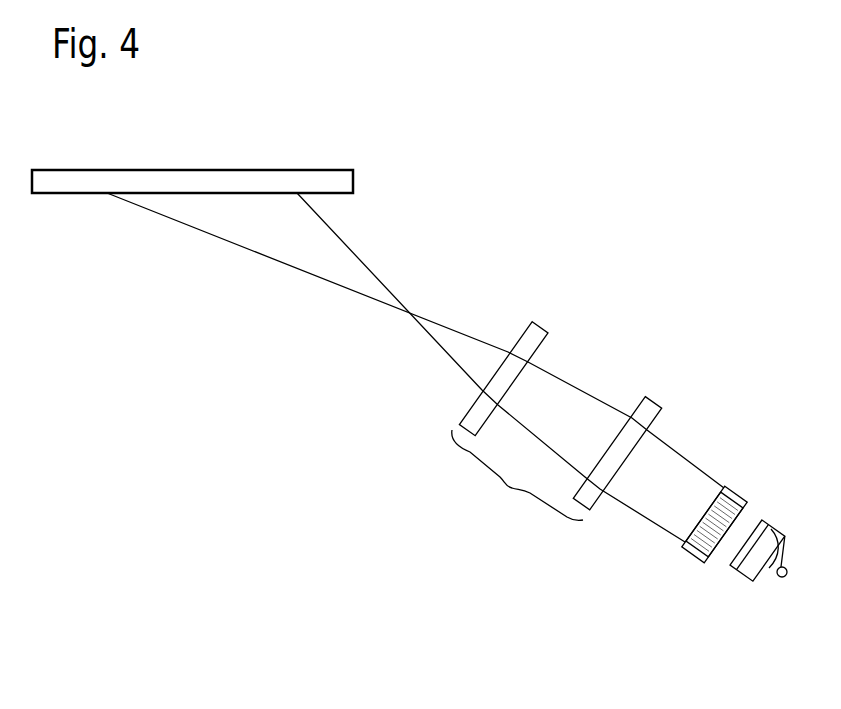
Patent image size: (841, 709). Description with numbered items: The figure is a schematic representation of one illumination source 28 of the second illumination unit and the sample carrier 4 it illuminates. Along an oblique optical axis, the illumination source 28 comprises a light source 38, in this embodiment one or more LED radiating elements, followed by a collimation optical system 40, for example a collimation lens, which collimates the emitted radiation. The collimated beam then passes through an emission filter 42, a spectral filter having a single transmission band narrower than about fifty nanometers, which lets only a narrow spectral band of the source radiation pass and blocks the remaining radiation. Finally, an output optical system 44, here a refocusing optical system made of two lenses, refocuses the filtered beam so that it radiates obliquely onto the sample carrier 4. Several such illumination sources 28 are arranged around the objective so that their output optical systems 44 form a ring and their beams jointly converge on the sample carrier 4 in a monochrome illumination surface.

The sample carrier 4 is at (353, 181).
The illumination source 28 is at (642, 372).
The output optical system 44 is at (503, 495).
The emission filter 42 is at (684, 549).
The collimation optical system 40 is at (743, 583).
The light source 38 is at (783, 577).